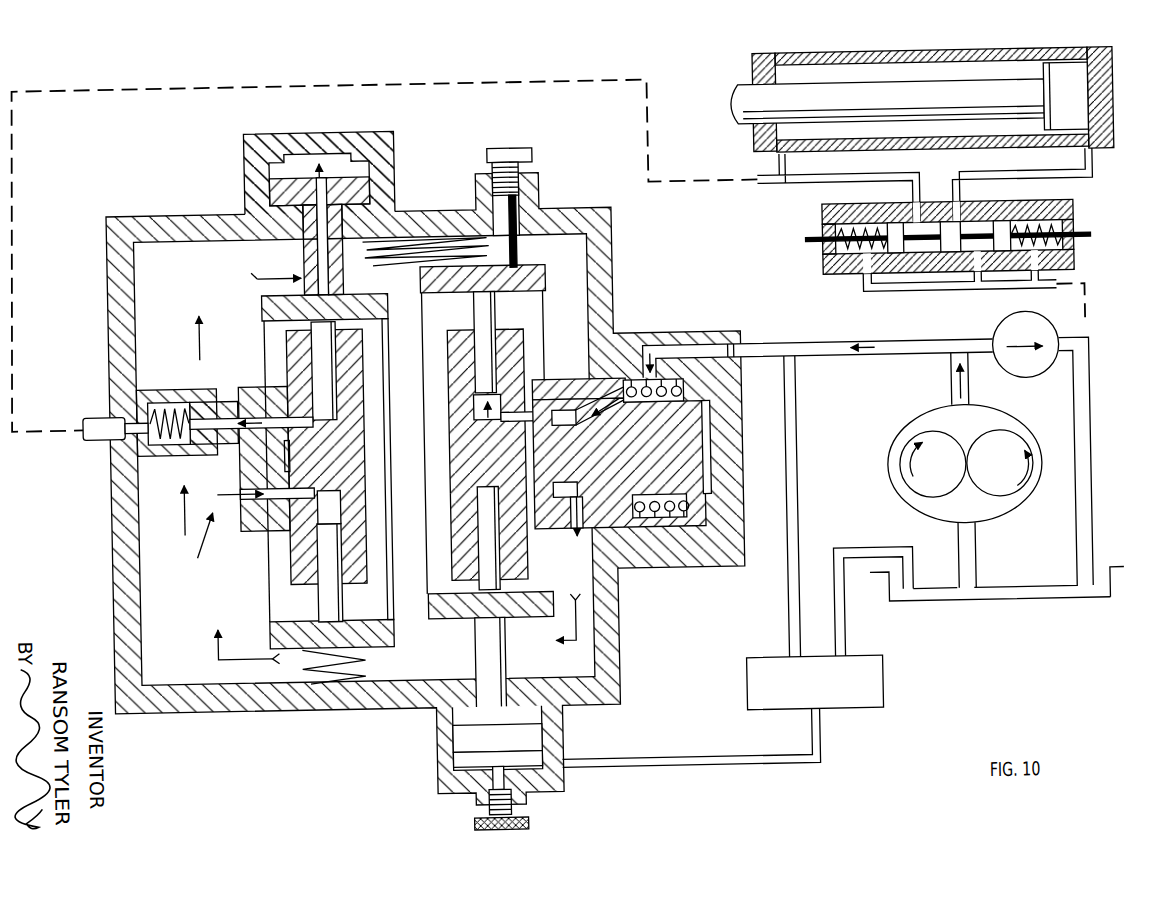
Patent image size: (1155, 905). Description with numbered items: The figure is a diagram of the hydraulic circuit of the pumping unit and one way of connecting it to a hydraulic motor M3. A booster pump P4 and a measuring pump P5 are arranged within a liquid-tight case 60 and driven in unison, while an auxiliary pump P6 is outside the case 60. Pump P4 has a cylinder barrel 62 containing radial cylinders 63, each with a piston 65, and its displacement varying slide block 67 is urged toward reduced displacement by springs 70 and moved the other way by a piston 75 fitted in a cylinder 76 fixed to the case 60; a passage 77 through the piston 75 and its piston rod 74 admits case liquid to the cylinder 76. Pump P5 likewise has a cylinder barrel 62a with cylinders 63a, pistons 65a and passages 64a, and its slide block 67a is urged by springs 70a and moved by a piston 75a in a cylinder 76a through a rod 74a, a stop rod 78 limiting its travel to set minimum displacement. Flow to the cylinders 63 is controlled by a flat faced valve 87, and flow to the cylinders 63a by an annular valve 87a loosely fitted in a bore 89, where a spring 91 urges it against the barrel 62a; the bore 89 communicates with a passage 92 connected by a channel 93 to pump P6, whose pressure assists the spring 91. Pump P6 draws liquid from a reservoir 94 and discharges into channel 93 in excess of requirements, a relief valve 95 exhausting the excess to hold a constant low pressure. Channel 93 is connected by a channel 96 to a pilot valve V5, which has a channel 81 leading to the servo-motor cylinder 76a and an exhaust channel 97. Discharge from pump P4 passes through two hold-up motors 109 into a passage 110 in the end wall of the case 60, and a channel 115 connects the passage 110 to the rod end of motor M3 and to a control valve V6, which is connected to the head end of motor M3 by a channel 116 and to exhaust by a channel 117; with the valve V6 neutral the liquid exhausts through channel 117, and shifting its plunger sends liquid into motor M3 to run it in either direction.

The case 60 is at (152, 231).
The cylinder 76 is at (340, 160).
The piston 75 is at (278, 198).
The passage 77 is at (315, 254).
The piston rod 74 is at (338, 270).
The spring 70 is at (298, 672).
The spring 70a is at (440, 259).
The slide block 67 is at (268, 639).
The slide block 67a is at (532, 285).
The piston 65 is at (313, 331).
The piston 65a is at (491, 321).
The passage 64a is at (523, 385).
The cylinder barrel 62 is at (290, 568).
The cylinder barrel 62a is at (520, 578).
The radial cylinder 63 is at (320, 496).
The cylinder 63a is at (484, 428).
The flat faced valve 87 is at (258, 396).
The flat faced valve 87a is at (563, 392).
The spring 91 is at (652, 506).
The bore 89 is at (660, 528).
The passage 92 is at (695, 356).
The hold-up motor 109 is at (185, 393).
The passage 110 is at (138, 440).
The channel 115 is at (101, 418).
The channel 116 is at (1093, 191).
The channel 117 is at (950, 300).
The rod 74a is at (498, 665).
The piston 75a is at (501, 758).
The cylinder 76a is at (444, 769).
The stop rod 78 is at (481, 784).
The channel 81 is at (694, 776).
The channel 93 is at (938, 386).
The reservoir 94 is at (1012, 613).
The relief valve 95 is at (1040, 381).
The channel 96 is at (792, 476).
The exhaust channel 97 is at (876, 566).
The booster pump P4 is at (244, 304).
The measuring pump P5 is at (457, 638).
The auxiliary pump P6 is at (912, 429).
The hydraulic motor M3 is at (716, 92).
The pilot valve V5 is at (822, 705).
The control valve V6 is at (797, 222).